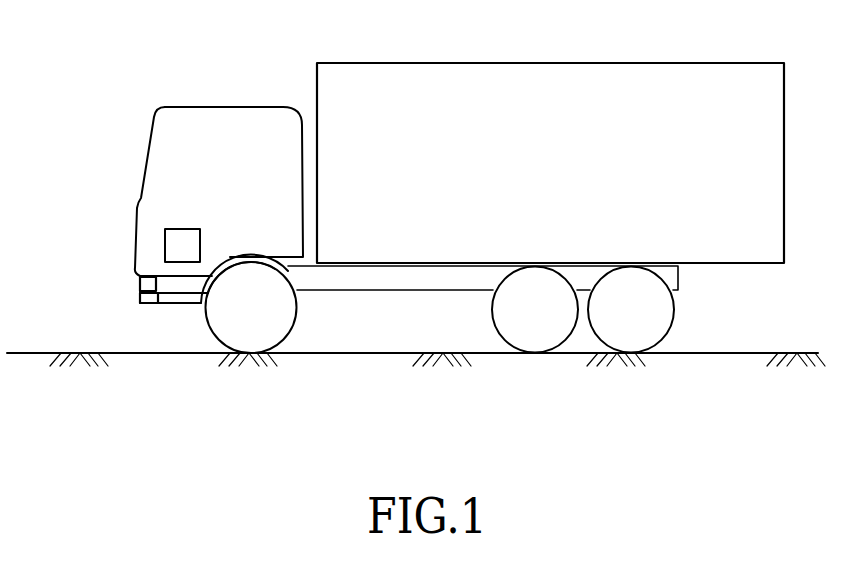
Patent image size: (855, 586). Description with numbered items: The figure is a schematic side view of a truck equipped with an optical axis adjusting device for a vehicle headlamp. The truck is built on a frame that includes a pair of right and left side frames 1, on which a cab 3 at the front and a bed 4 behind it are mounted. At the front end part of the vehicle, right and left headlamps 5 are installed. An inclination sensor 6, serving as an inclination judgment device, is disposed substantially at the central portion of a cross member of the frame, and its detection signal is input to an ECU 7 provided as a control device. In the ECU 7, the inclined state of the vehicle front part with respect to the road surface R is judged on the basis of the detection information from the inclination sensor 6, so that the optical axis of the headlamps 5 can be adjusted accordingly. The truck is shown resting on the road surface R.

The side frame 1 is at (400, 282).
The cab 3 is at (226, 120).
The bed 4 is at (576, 75).
The headlamp 5 is at (140, 283).
The inclination sensor 6 is at (140, 298).
The ECU 7 is at (168, 246).
The road surface R is at (135, 353).